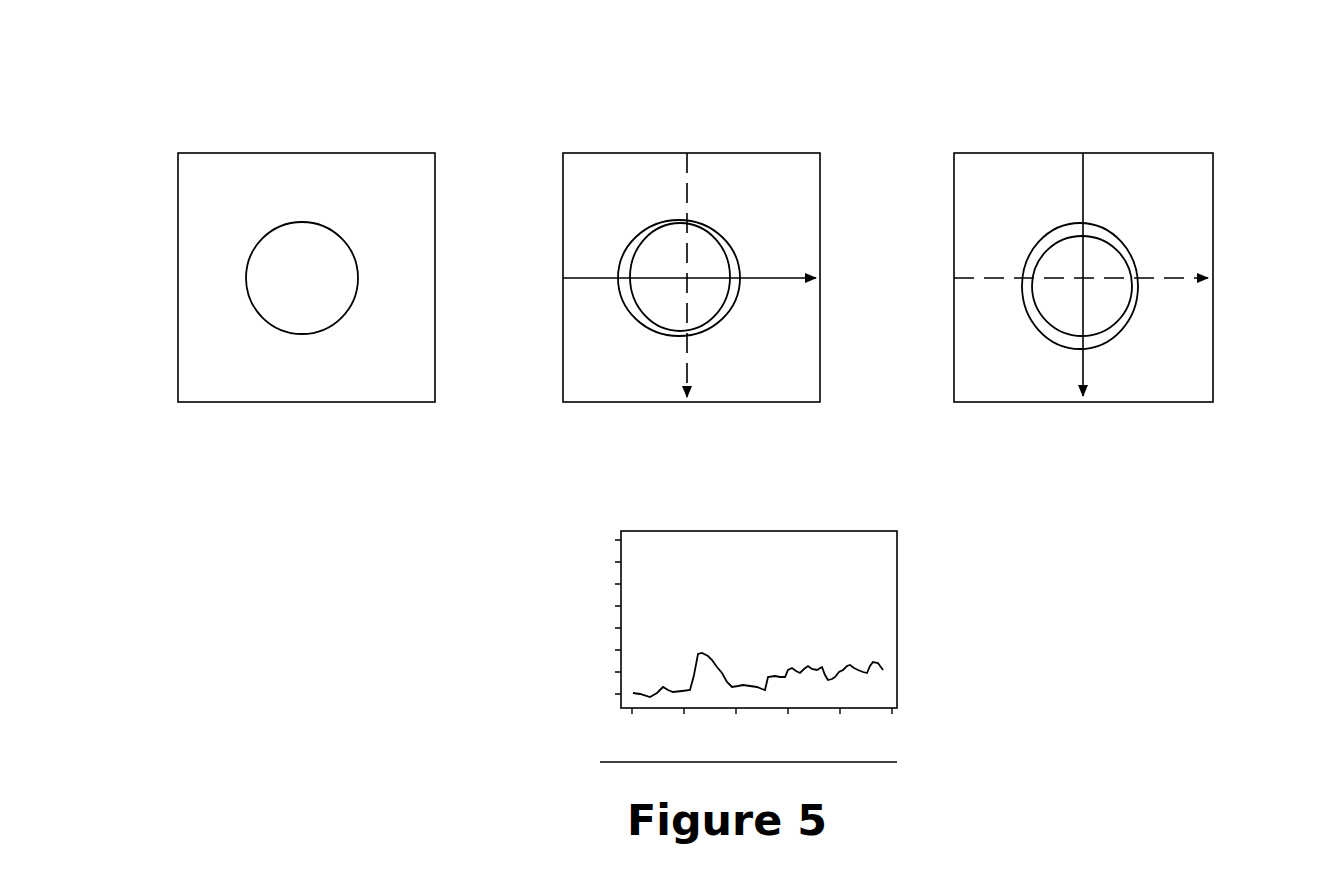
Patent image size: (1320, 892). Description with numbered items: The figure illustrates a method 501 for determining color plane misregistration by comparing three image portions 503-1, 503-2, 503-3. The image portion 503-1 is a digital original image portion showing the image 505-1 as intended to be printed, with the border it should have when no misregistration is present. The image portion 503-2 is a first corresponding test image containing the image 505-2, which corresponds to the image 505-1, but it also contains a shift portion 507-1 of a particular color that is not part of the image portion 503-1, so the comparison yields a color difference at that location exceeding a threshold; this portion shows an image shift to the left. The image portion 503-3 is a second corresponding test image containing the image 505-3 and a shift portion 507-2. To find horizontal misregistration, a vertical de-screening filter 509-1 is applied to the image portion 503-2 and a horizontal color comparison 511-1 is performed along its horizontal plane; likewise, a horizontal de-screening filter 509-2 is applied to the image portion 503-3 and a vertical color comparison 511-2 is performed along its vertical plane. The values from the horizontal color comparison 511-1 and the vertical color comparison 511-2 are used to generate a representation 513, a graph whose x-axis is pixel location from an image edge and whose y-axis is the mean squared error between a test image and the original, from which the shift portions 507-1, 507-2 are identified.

The method 501 is at (1210, 70).
The image portion 503-1 is at (250, 153).
The image portion 503-2 is at (615, 153).
The image portion 503-3 is at (1003, 153).
The image 505-1 is at (262, 276).
The image 505-2 is at (651, 258).
The image 505-3 is at (1048, 252).
The shift portion 507-1 is at (636, 322).
The shift portion 507-2 is at (1040, 337).
The vertical de-screening filter 509-1 is at (691, 153).
The horizontal de-screening filter 509-2 is at (954, 278).
The horizontal color comparison 511-1 is at (563, 278).
The vertical color comparison 511-2 is at (1083, 153).
The representation 513 is at (528, 598).